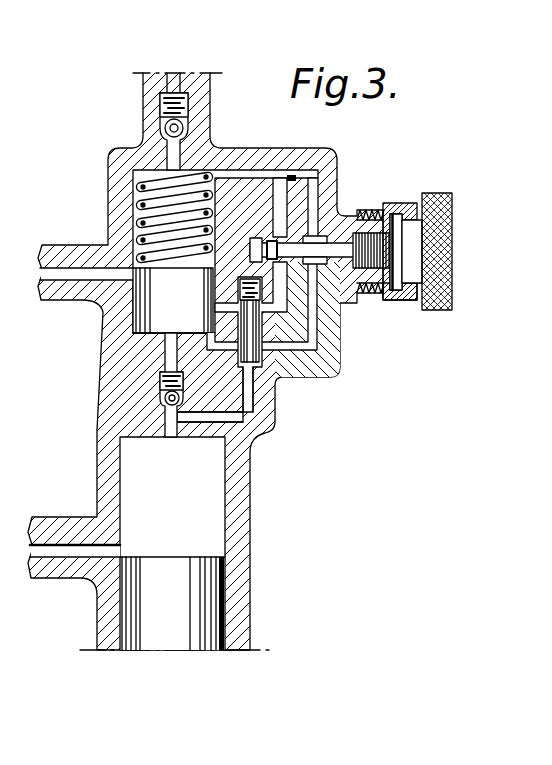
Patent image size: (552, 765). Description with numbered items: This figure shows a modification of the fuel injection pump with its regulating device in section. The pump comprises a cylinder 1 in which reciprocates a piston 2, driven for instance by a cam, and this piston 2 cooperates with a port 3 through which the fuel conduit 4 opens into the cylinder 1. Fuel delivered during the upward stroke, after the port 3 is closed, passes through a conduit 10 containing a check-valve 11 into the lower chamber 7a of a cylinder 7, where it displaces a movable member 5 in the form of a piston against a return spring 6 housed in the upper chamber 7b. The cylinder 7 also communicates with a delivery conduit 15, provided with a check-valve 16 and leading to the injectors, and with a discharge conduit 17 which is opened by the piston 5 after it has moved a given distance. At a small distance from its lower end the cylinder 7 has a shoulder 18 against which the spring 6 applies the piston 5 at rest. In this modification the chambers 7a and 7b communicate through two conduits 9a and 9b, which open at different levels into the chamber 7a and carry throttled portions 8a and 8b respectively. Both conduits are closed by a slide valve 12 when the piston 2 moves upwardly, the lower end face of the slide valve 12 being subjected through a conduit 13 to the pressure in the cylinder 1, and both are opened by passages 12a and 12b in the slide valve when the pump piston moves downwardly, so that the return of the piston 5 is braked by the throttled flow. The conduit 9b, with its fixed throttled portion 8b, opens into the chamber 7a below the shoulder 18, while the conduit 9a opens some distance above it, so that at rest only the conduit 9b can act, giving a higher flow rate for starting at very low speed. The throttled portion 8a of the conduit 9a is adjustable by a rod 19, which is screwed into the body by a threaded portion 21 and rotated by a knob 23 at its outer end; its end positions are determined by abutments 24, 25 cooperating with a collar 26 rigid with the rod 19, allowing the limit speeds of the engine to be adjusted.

The cylinder 1 is at (222, 503).
The piston 2 is at (202, 582).
The port 3 is at (121, 548).
The fuel conduit 4 is at (53, 549).
The movable member 5 is at (150, 302).
The return spring 6 is at (152, 184).
The cylinder 7 is at (138, 233).
The lower chamber 7a is at (152, 346).
The chamber 7b is at (147, 197).
The throttled portion 8a is at (276, 258).
The throttled portion 8b is at (297, 176).
The conduit 9a is at (277, 197).
The conduit 9b is at (315, 276).
The conduit 10 is at (167, 428).
The check-valve 11 is at (160, 399).
The slide valve 12 is at (252, 306).
The passage 12a is at (256, 297).
The passage 12b is at (262, 366).
The conduit 13 is at (252, 424).
The delivery conduit 15 is at (174, 150).
The check-valve 16 is at (167, 124).
The discharge conduit 17 is at (63, 268).
The shoulder 18 is at (148, 340).
The rod 19 is at (330, 250).
The threaded portion 21 is at (382, 236).
The knob 23 is at (437, 248).
The abutment 24 is at (409, 204).
The abutment 25 is at (390, 299).
The collar 26 is at (410, 302).